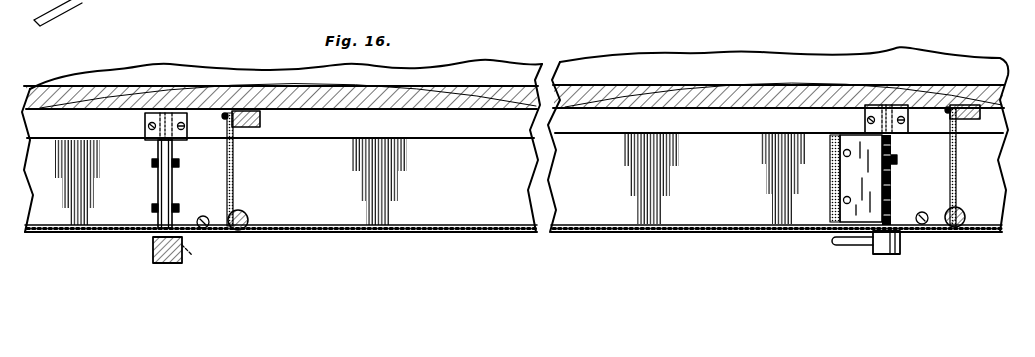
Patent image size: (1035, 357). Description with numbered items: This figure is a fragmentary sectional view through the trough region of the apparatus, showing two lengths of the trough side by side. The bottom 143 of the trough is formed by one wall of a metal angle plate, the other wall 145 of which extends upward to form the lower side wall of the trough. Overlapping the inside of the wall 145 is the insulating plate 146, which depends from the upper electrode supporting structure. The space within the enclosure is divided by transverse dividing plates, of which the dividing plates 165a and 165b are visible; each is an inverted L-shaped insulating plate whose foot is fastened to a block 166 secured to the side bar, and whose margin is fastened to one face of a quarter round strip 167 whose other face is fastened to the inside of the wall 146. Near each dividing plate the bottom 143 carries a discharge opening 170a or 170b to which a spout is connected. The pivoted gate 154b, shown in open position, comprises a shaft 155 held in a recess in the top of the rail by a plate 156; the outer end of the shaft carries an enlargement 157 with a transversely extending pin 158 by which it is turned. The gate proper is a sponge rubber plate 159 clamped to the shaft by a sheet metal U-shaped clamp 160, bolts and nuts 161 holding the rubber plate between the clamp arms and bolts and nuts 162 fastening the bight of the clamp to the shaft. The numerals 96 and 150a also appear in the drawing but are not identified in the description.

The bottom of the trough 143 is at (74, 9).
The hatched bed or support layer 96 is at (408, 94).
The wall of the angle plate 145 is at (433, 235).
The plate 146 is at (438, 226).
The vertical post 150a is at (151, 196).
The gate 154b is at (822, 196).
The shaft 155 is at (148, 143).
The plate 156 is at (145, 121).
The enlargement 157 is at (153, 252).
The pin 158 is at (193, 256).
The plate of sponge rubber 159 is at (831, 210).
The U-shaped clamp 160 is at (850, 180).
The bolts and nuts 161 is at (843, 153).
The bolts and nuts 162 is at (186, 167).
The dividing plate 165a is at (234, 160).
The dividing plate 165b is at (957, 157).
The block 166 is at (262, 122).
The quarter round strip 167 is at (248, 222).
The discharge opening 170a is at (205, 229).
The discharge opening 170b is at (938, 228).